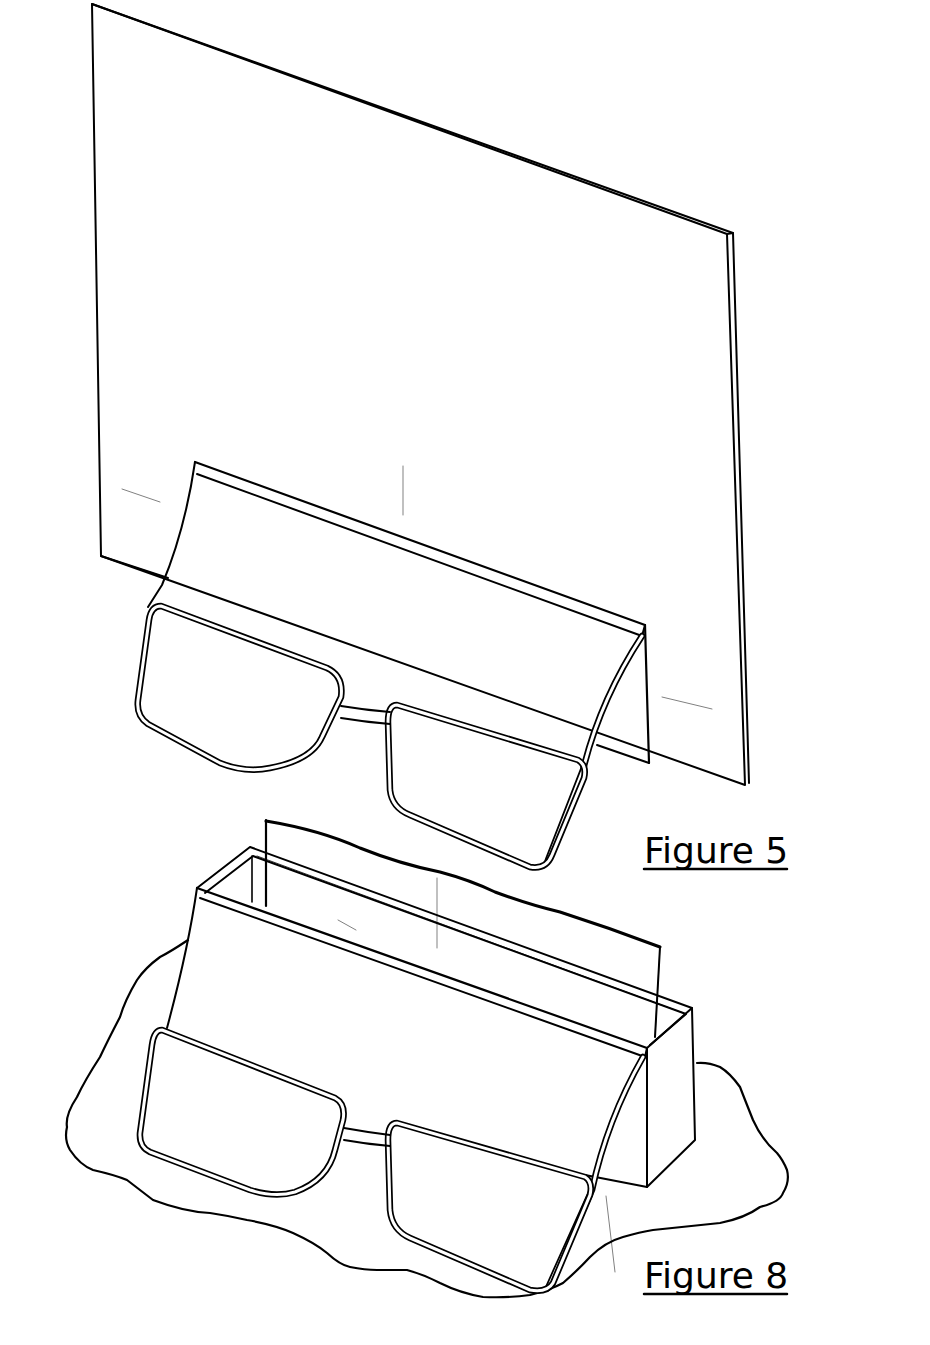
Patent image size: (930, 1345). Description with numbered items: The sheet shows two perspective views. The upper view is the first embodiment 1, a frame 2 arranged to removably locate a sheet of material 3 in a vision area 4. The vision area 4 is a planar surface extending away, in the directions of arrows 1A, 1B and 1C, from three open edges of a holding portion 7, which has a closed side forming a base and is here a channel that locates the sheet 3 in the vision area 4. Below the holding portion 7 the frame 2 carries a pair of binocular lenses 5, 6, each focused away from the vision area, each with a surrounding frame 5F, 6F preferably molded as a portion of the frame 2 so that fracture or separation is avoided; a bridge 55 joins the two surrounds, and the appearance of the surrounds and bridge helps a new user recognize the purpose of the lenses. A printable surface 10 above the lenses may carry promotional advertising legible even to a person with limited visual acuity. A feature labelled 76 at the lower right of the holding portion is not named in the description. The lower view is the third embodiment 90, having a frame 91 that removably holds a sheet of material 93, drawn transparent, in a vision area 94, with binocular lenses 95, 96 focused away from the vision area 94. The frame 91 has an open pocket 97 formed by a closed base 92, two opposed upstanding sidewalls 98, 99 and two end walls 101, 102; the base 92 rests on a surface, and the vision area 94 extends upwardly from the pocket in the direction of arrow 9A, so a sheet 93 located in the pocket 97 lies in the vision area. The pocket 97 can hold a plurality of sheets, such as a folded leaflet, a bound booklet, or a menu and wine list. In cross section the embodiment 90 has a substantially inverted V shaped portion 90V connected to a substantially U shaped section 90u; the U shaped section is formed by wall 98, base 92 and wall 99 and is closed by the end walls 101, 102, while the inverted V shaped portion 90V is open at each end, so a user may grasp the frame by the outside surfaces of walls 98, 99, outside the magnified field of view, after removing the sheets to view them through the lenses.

In FIG. 5, the first embodiment 1 is at (72, 512).
In FIG. 5, the arrow 1A is at (403, 466).
In FIG. 5, the arrow 1B is at (160, 502).
In FIG. 5, the arrow 1C is at (712, 709).
In FIG. 5, the frame 2 is at (376, 653).
In FIG. 5, the sheet of material 3 is at (420, 394).
In FIG. 5, the vision area 4 is at (456, 410).
In FIG. 5, the binocular lens 5 is at (216, 670).
In FIG. 5, the surrounding frame 5F is at (226, 636).
In FIG. 5, the binocular lens 6 is at (502, 758).
In FIG. 5, the surrounding frame 6F is at (482, 722).
In FIG. 5, the holding portion 7 is at (527, 588).
In FIG. 5, the printable surface 10 is at (390, 626).
In FIG. 5, the bridge 55 is at (352, 756).
In FIG. 5, the bottom tab 76 is at (622, 738).
In FIG. 8, the third embodiment 90 is at (449, 1047).
In FIG. 8, the U shaped section 90u is at (356, 918).
In FIG. 8, the inverted V shaped cross section 90V is at (606, 1196).
In FIG. 8, the arrow 9A is at (437, 948).
In FIG. 8, the frame 91 is at (332, 1036).
In FIG. 8, the closed base 92 is at (672, 1160).
In FIG. 8, the sheet of material 93 is at (460, 915).
In FIG. 8, the vision area 94 is at (284, 848).
In FIG. 8, the binocular lens 95 is at (244, 1132).
In FIG. 8, the binocular lens 96 is at (498, 1214).
In FIG. 8, the open pocket 97 is at (545, 988).
In FIG. 8, the upstanding sidewall 98 is at (628, 1118).
In FIG. 8, the upstanding sidewall 99 is at (610, 1002).
In FIG. 8, the end wall 101 is at (232, 864).
In FIG. 8, the end wall 102 is at (670, 1042).